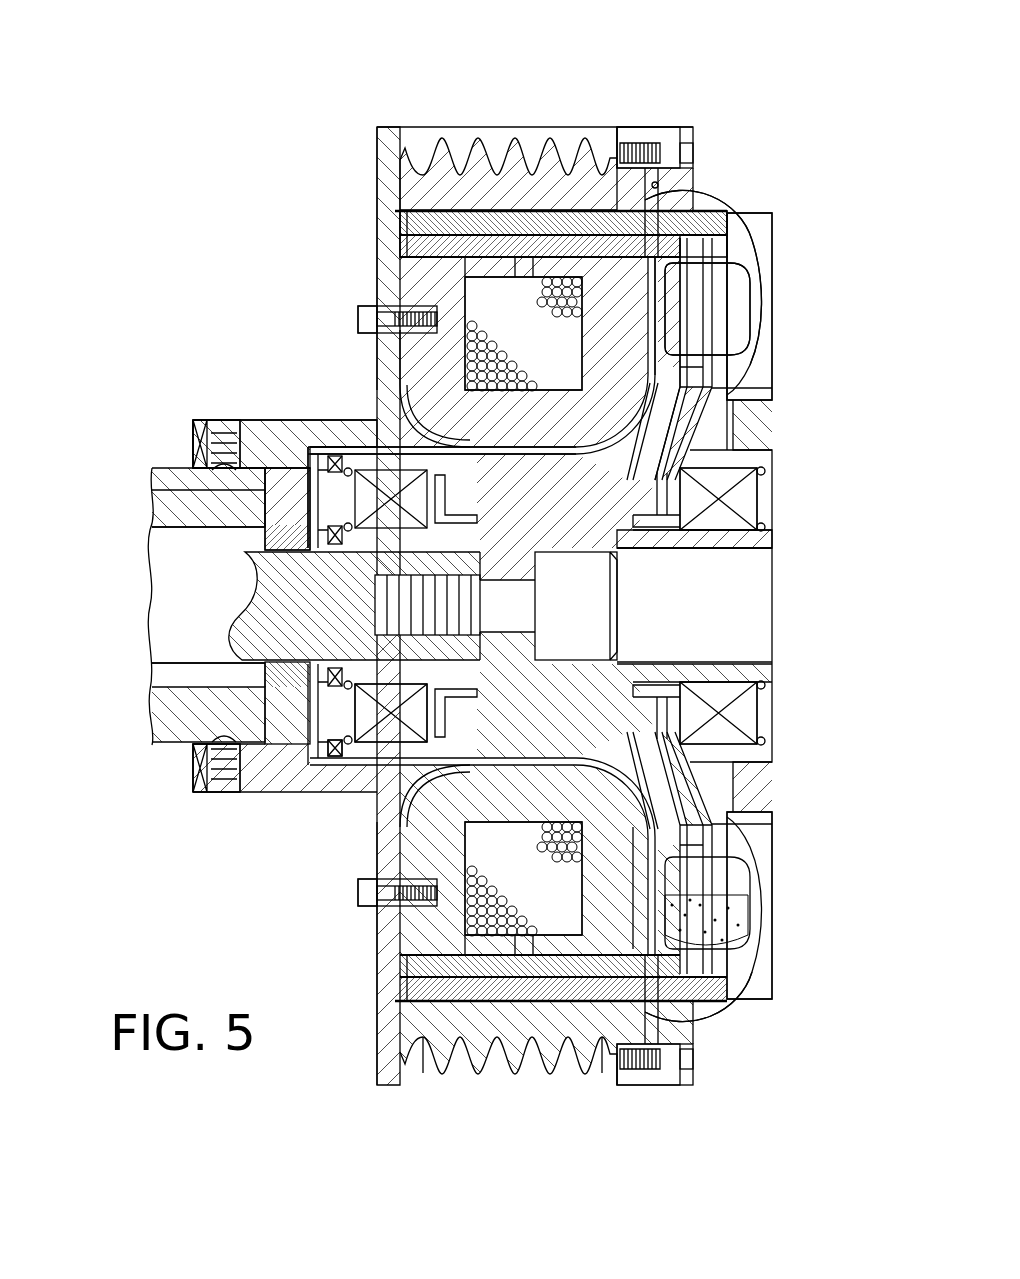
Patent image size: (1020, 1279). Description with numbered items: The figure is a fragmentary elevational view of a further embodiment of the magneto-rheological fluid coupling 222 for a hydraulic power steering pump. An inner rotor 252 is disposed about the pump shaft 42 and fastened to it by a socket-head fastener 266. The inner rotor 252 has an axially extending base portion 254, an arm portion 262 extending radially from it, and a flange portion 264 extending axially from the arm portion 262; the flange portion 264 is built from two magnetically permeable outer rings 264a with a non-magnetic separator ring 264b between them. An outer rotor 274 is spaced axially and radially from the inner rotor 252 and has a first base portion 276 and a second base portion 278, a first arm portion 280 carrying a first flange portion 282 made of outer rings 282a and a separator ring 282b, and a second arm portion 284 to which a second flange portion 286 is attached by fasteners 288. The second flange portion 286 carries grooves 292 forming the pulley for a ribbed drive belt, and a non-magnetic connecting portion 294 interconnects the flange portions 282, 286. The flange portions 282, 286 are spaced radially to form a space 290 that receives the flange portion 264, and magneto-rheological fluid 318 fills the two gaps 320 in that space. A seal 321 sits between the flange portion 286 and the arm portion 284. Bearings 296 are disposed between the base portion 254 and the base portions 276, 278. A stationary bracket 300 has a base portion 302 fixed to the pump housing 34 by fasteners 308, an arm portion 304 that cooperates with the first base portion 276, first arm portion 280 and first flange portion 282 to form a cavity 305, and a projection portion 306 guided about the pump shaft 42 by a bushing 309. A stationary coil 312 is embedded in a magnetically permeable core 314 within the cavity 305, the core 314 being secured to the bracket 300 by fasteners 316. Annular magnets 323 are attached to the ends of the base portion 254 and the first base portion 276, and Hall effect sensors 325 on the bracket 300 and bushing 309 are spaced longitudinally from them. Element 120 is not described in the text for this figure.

The magneto-rheological fluid coupling 222 is at (298, 82).
The outer rings 264a is at (630, 205).
The separator ring 264b is at (523, 250).
The flange portion 264 is at (695, 130).
The space 290 is at (575, 212).
The fasteners 288 is at (680, 125).
The second flange portion 286 is at (418, 132).
The separator ring 282b is at (578, 212).
The outer rings 282a is at (420, 260).
The first flange portion 282 is at (400, 270).
The connecting portion 294 is at (392, 175).
The seal 321 is at (658, 182).
The cover 120 is at (713, 200).
The second arm portion 284 is at (742, 275).
The bracket 300 is at (375, 312).
The inner rotor 252 is at (705, 310).
The cavity 305 is at (402, 347).
The first arm portion 280 is at (668, 372).
The base portion 302 is at (302, 430).
The first base portion 276 is at (428, 460).
The arm portion 262 is at (757, 386).
The fasteners 308 is at (217, 462).
The second base portion 278 is at (762, 478).
The Hall effect sensors 325 is at (275, 500).
The projection portion 306 is at (302, 505).
The base portion 254 is at (652, 540).
The pump shaft 42 is at (280, 605).
The fastener 266 is at (618, 608).
The bushing 309 is at (268, 676).
The pump housing 34 is at (170, 718).
The bearings 296 is at (735, 720).
The core 314 is at (660, 830).
The magnets 323 is at (322, 758).
The outer rotor 274 is at (745, 865).
The fasteners 316 is at (375, 890).
The magneto-rheological fluid 318 is at (735, 925).
The arm portion 304 is at (380, 935).
The gaps 320 is at (655, 990).
The grooves 292 is at (598, 1060).
The coil 312 is at (518, 920).